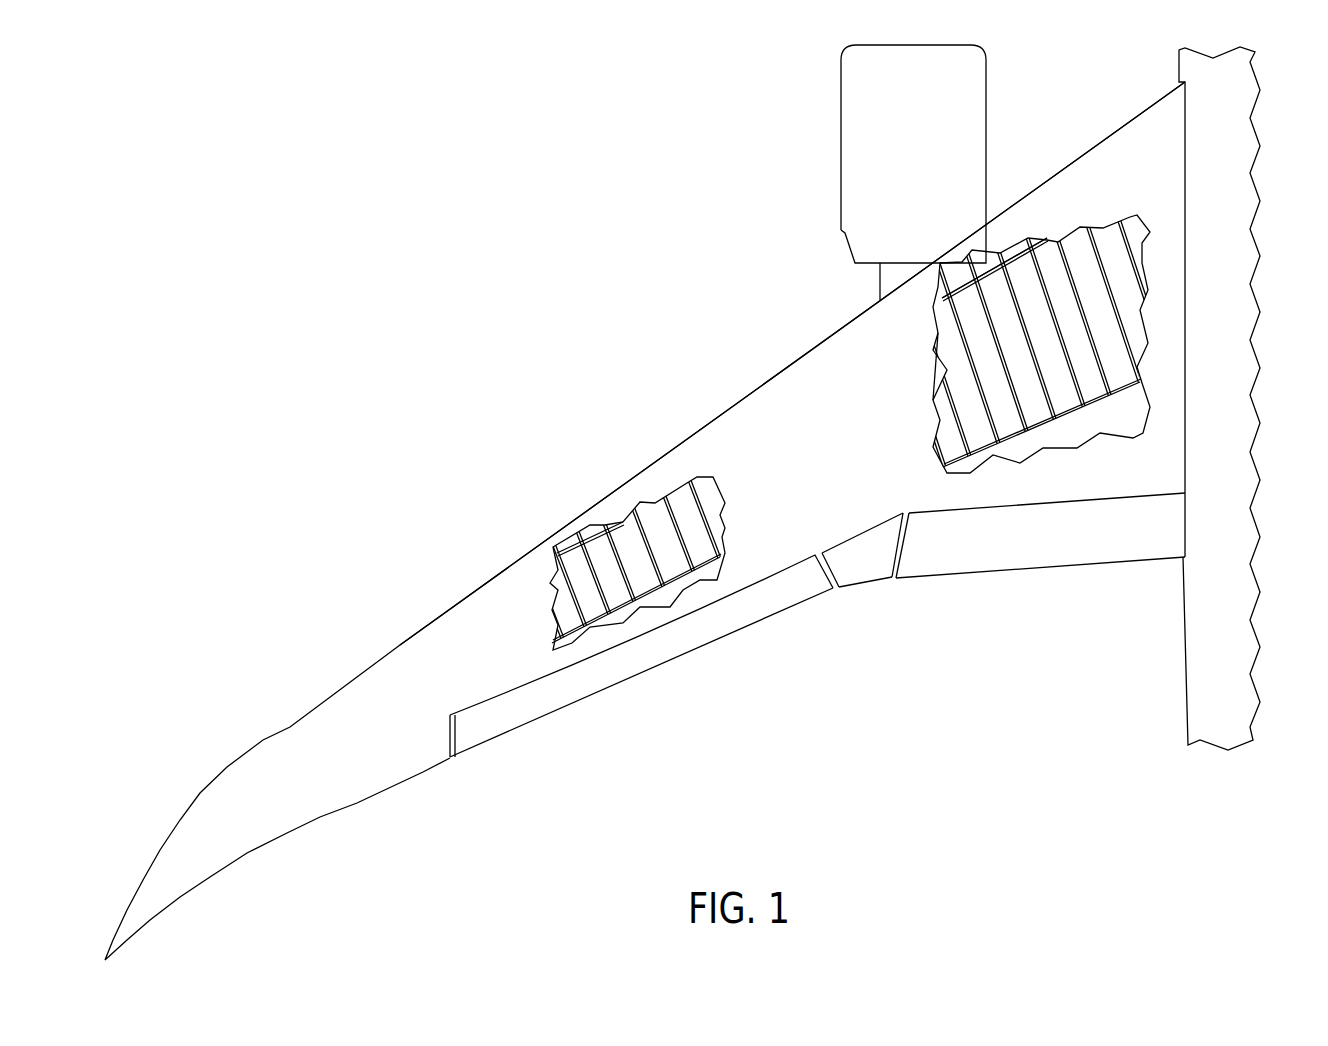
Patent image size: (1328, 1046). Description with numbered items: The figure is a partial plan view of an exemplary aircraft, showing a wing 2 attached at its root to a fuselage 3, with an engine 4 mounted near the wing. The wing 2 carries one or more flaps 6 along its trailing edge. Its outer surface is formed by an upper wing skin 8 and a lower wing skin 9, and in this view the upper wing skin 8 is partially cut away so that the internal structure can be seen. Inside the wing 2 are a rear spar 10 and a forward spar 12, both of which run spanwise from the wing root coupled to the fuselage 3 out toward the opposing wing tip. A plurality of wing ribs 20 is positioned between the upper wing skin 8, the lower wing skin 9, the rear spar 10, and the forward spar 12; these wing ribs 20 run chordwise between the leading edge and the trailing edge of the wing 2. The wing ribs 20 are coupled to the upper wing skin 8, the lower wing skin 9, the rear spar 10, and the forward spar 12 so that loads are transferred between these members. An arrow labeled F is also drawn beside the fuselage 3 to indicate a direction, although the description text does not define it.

The wing 2 is at (645, 521).
The fuselage 3 is at (1227, 380).
The engine 4 is at (841, 172).
The flaps 6 is at (733, 635).
The upper wing skin 8 is at (758, 415).
The lower wing skin 9 is at (623, 522).
The rear spar 10 is at (1045, 420).
The forward spar 12 is at (972, 278).
The wing ribs 20 is at (953, 367).
The load direction F is at (1292, 408).